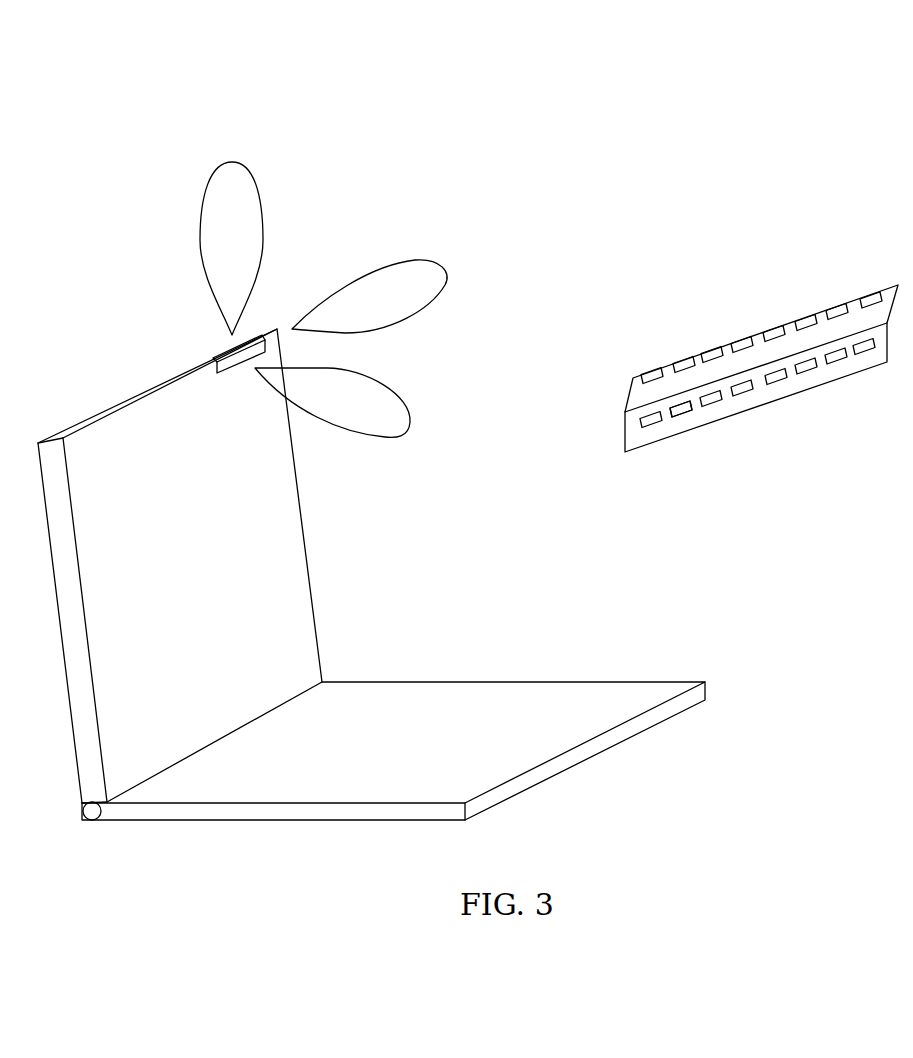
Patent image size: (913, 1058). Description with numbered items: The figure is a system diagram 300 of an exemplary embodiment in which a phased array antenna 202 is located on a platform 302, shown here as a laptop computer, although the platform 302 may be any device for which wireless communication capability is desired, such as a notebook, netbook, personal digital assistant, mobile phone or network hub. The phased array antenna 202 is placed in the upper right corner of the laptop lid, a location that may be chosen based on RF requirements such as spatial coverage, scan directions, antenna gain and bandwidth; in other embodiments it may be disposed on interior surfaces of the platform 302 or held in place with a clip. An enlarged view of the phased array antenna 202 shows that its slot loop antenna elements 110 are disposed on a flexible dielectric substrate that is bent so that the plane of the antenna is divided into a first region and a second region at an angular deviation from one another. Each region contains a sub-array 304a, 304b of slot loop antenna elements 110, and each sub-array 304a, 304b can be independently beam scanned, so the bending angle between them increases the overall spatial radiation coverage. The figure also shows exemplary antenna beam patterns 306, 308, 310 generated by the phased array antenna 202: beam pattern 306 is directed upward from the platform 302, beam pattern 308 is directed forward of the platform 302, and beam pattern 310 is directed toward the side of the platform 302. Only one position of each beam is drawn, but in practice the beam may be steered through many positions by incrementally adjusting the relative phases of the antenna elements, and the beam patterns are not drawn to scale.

The system diagram 300 is at (540, 48).
The platform 302 is at (550, 682).
The beam pattern 306 is at (202, 228).
The beam pattern 308 is at (390, 437).
The beam pattern 310 is at (420, 260).
The phased array antenna 202 is at (197, 361).
The sub-array 304a is at (655, 368).
The sub-array 304b is at (625, 438).
The slot loop antenna element 110 is at (678, 417).